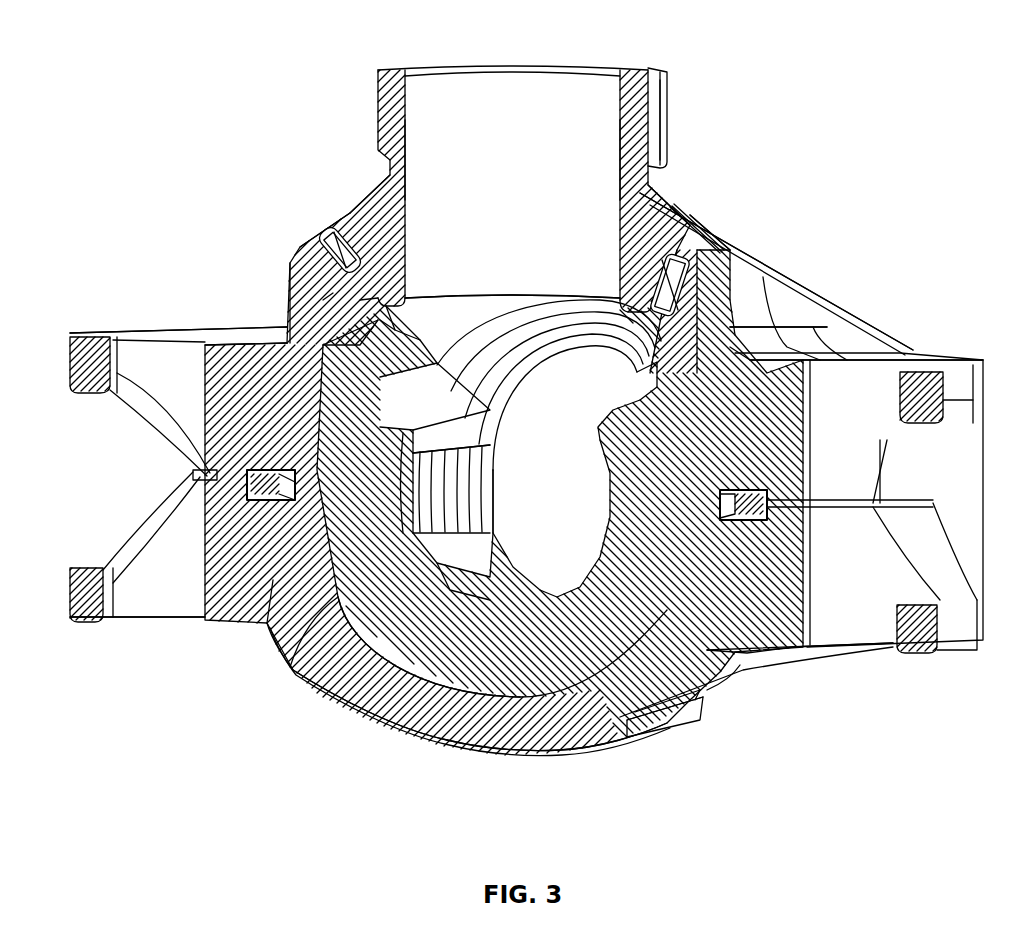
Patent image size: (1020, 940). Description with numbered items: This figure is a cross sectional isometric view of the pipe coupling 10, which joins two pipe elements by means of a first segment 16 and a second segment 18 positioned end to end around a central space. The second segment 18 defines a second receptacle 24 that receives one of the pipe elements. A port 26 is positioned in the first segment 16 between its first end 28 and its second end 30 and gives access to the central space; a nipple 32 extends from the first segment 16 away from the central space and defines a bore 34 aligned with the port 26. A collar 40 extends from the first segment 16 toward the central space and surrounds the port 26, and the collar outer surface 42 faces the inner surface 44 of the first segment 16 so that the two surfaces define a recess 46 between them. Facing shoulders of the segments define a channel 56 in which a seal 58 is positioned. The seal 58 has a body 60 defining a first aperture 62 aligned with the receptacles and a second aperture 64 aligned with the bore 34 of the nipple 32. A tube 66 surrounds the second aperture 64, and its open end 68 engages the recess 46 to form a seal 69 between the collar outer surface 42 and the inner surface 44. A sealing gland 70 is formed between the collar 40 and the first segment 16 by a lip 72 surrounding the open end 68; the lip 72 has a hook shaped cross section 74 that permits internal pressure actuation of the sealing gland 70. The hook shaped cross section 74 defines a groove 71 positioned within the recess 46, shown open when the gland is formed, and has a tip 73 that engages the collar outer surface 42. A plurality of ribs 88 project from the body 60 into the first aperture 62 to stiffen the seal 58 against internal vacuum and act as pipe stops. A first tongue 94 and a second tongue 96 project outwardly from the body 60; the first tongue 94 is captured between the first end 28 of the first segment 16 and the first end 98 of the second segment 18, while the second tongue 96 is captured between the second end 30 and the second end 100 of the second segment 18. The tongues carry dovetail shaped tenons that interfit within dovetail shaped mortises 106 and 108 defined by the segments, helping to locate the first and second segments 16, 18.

The coupling 10 is at (828, 45).
The first segment 16 is at (797, 293).
The second segment 18 is at (730, 700).
The second receptacle 24 is at (543, 501).
The port 26 is at (565, 117).
The first end 28 is at (888, 347).
The second end 30 is at (230, 333).
The nipple 32 is at (654, 110).
The bore 34 is at (493, 87).
The collar 40 is at (650, 207).
The outer surface 42 is at (670, 280).
The inner surface 44 is at (683, 263).
The recess 46 is at (345, 247).
The channel 56 is at (450, 703).
The seal 58 is at (370, 660).
The body 60 is at (557, 663).
The first aperture 62 is at (290, 647).
The second aperture 64 is at (323, 347).
The tube 66 is at (333, 293).
The open end 68 is at (347, 293).
The seal 69 is at (360, 247).
The sealing gland 70 is at (287, 343).
The groove 71 is at (350, 313).
The lip 72 is at (360, 267).
The tip 73 is at (360, 267).
The hook shaped cross section 74 is at (360, 203).
The ribs 88 is at (451, 417).
The first tongue 94 is at (765, 515).
The second tongue 96 is at (277, 497).
The first end 98 is at (817, 660).
The second end 100 is at (233, 627).
The first dovetail shaped mortise 106 is at (740, 493).
The second dovetail shaped mortise 108 is at (260, 473).